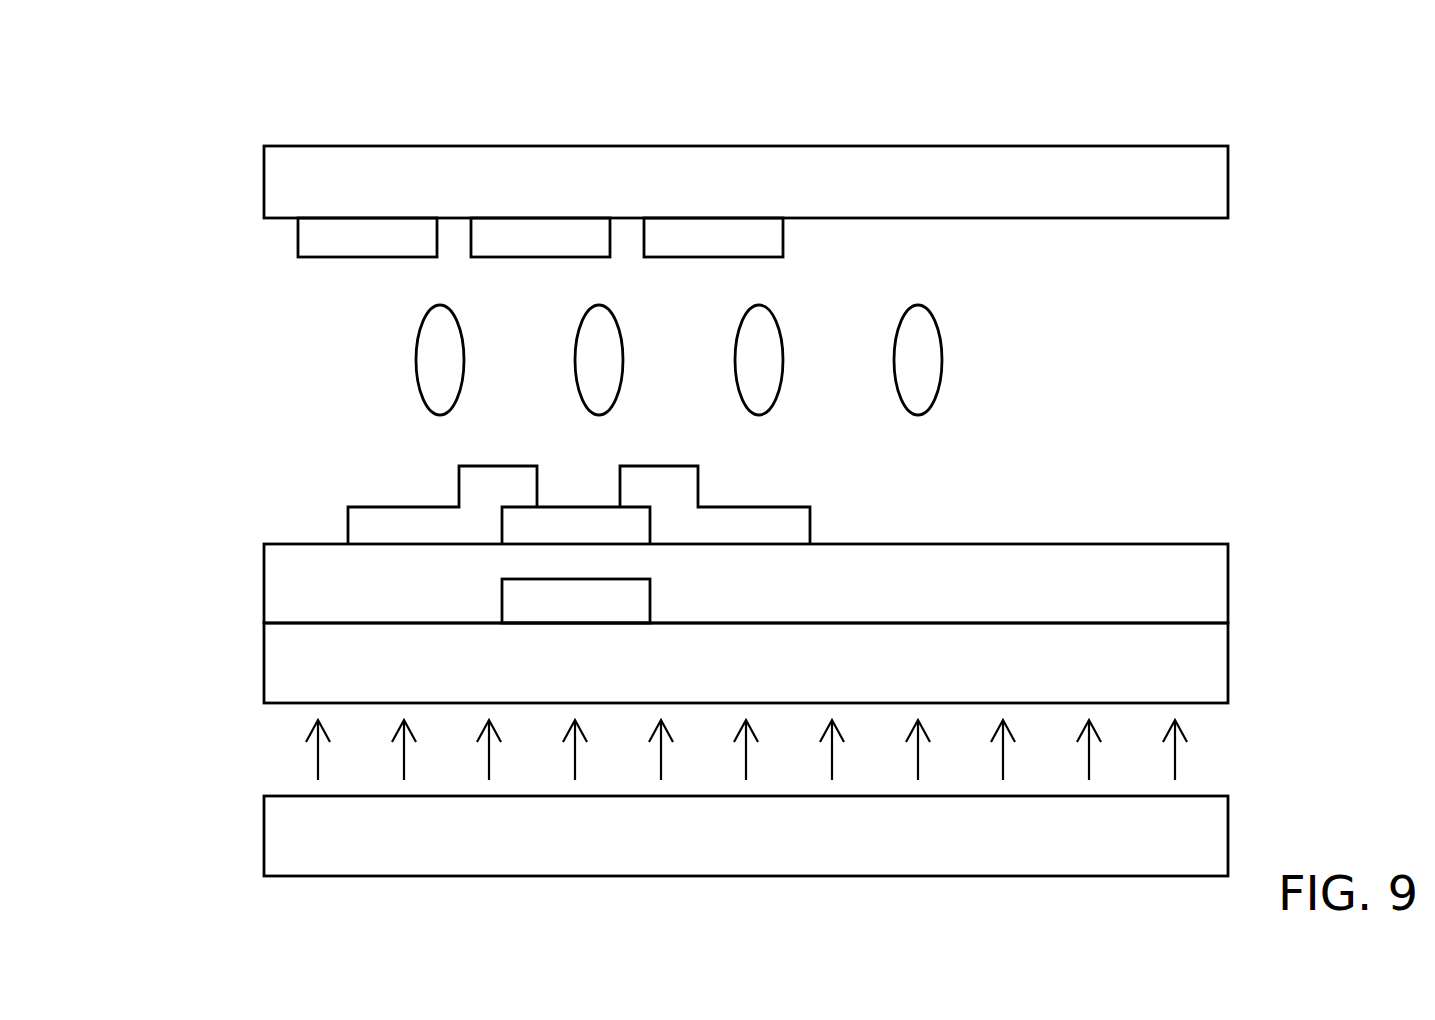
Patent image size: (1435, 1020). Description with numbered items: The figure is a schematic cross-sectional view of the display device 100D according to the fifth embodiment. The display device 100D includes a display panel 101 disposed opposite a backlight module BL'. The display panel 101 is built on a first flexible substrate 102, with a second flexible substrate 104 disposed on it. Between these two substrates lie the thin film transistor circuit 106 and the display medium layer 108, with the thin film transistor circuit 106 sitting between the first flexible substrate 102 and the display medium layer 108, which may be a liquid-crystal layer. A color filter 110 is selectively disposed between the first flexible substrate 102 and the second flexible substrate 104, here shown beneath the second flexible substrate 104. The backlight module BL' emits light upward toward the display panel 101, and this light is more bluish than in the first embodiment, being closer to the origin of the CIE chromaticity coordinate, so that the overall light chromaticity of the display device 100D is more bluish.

The display device 100D is at (126, 49).
The display panel 101 is at (175, 127).
The second flexible substrate 104 is at (308, 184).
The color filter 110 is at (290, 238).
The display medium layer 108 is at (350, 360).
The thin film transistor circuit 106 is at (260, 466).
The first flexible substrate 102 is at (308, 664).
The backlight module BL' is at (699, 836).